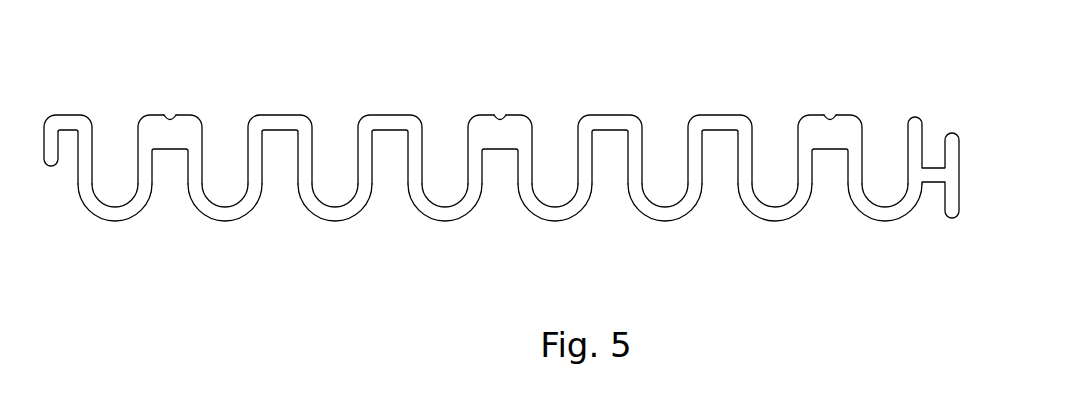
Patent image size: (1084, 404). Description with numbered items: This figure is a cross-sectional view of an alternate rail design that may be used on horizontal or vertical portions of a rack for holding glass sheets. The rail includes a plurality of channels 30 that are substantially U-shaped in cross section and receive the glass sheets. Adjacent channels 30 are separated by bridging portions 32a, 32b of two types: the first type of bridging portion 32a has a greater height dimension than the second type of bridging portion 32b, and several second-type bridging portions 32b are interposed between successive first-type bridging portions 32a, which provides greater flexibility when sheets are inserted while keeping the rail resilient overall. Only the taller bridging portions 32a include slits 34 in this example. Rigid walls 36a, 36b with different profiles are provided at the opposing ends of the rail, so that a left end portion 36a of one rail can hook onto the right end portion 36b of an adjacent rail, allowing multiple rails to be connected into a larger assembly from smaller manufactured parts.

The channels 30 is at (329, 189).
The first type of bridging portion 32a is at (502, 150).
The second type of bridging portion 32b is at (723, 131).
The slits 34 is at (500, 112).
The rigid wall (left end portion) 36a is at (70, 160).
The rigid wall (right end portion) 36b is at (928, 208).